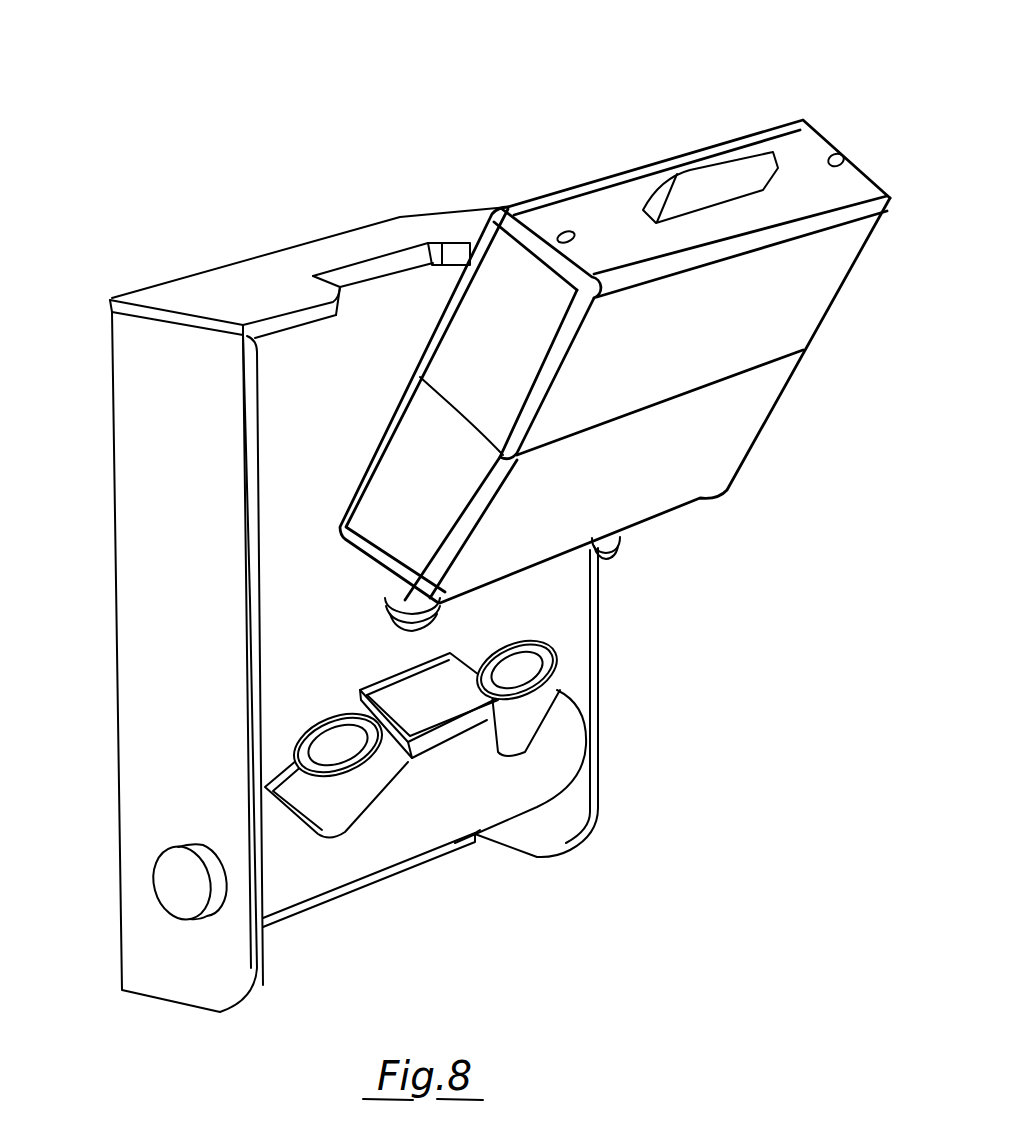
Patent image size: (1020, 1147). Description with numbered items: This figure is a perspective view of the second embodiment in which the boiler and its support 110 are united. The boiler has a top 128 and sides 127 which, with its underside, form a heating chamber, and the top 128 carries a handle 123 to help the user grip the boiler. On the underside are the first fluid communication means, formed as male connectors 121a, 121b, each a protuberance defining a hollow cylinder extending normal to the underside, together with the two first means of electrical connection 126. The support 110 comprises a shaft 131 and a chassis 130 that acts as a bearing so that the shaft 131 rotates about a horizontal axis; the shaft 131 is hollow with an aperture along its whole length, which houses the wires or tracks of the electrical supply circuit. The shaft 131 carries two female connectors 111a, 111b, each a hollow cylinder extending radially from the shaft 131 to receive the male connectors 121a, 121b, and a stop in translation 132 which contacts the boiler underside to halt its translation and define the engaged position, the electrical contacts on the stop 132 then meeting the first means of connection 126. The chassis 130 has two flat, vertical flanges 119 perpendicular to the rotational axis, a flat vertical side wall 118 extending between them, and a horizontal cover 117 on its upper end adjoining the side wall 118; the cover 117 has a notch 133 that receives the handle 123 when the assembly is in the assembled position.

The support 110 is at (282, 233).
The chassis 130 is at (187, 274).
The notch 133 is at (367, 267).
The cover 117 is at (437, 223).
The flange 119 is at (150, 620).
The side wall 118 is at (283, 690).
The side 127 is at (783, 330).
The top 128 is at (615, 200).
The handle 123 is at (703, 167).
The first means of electrical connection 126 is at (562, 232).
The male connector 121a is at (440, 613).
The male connector 121b is at (620, 543).
The stop in translation 132 is at (437, 762).
The female connector 111a is at (311, 805).
The female connector 111b is at (527, 726).
The shaft 131 is at (383, 845).